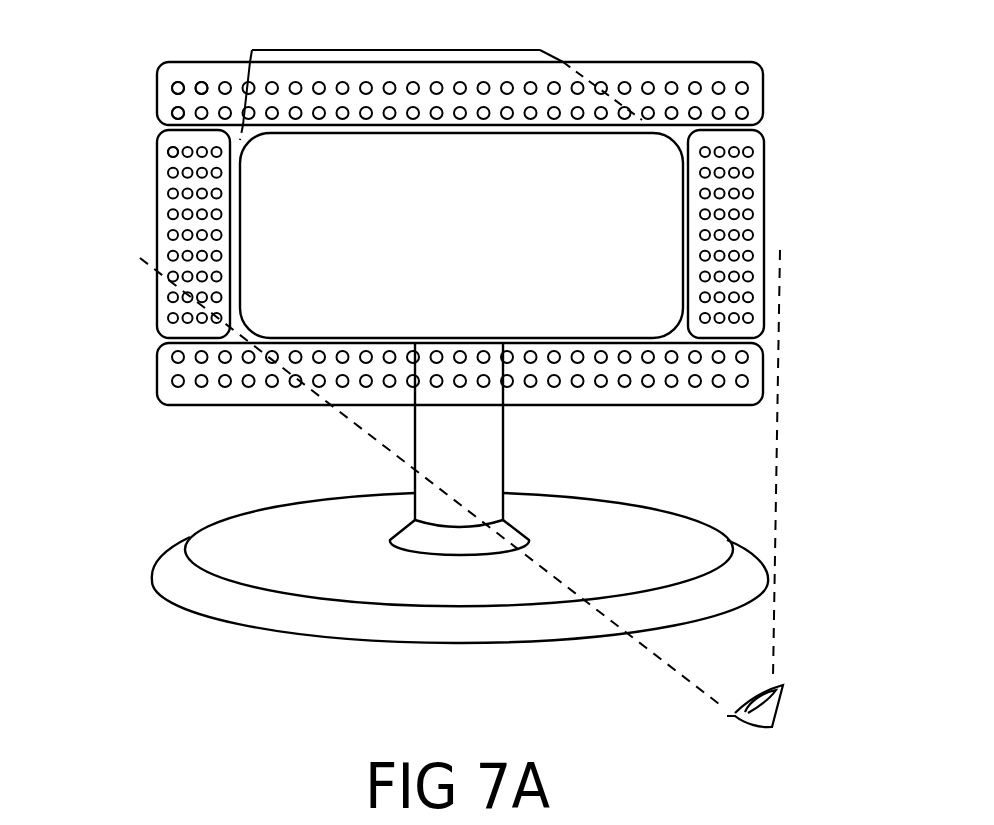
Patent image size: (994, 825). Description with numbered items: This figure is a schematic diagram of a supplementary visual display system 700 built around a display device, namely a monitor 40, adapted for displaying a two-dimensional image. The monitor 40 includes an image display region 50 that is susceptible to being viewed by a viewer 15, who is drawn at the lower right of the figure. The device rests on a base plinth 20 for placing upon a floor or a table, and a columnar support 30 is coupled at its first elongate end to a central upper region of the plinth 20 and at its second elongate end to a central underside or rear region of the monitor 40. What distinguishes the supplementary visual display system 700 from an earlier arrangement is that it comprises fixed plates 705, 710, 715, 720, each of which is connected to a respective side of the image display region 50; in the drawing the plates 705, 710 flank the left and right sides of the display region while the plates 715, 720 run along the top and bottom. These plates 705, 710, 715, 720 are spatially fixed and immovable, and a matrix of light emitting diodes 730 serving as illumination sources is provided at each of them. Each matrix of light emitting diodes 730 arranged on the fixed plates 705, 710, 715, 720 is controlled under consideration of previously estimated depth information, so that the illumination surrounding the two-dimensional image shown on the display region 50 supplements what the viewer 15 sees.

The supplementary visual display system 700 is at (140, 624).
The fixed plate 715 is at (763, 88).
The light emitting diodes 730 is at (170, 152).
The fixed plate 705 is at (165, 172).
The fixed plate 710 is at (742, 187).
The fixed plate 720 is at (658, 390).
The image display region 50 is at (477, 250).
The columnar support 30 is at (483, 452).
The base plinth 20 is at (257, 524).
The monitor 40 is at (420, 42).
The viewer 15 is at (710, 707).